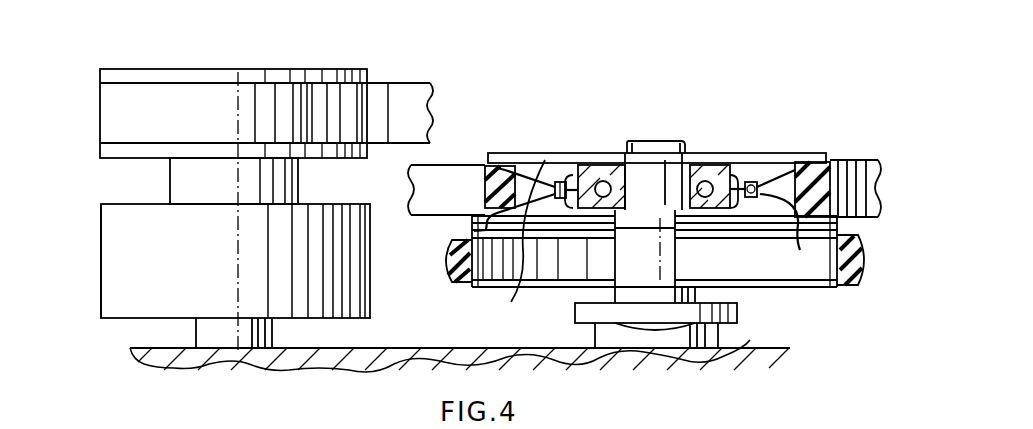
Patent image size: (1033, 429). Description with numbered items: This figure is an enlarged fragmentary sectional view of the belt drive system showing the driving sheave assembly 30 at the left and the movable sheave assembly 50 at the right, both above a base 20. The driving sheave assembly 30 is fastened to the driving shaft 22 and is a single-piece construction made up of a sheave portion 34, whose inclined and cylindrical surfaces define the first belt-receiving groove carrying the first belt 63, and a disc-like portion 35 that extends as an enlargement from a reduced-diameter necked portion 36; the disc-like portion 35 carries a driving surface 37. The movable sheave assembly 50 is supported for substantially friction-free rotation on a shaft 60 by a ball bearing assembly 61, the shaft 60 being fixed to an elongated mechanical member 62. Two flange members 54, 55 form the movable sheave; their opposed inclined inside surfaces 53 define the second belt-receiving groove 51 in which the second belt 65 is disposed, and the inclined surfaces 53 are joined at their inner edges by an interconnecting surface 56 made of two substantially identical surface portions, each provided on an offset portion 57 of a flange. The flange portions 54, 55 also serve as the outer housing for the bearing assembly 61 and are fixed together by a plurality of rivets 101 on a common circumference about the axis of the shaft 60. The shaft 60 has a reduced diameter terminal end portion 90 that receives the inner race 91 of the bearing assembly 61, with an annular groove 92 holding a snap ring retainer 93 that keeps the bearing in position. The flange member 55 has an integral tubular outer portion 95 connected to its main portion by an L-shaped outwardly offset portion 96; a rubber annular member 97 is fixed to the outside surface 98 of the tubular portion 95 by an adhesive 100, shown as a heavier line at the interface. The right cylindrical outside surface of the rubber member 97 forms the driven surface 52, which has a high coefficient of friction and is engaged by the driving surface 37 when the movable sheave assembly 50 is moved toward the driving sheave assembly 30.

The base 20 is at (778, 347).
The driving shaft 22 is at (185, 330).
The driving sheave assembly 30 is at (160, 170).
The sheave portion 34 is at (181, 68).
The disc-like portion 35 is at (113, 258).
The necked portion 36 is at (170, 188).
The driving surface 37 is at (101, 232).
The movable sheave assembly 50 is at (822, 120).
The second belt-receiving groove 51 is at (798, 166).
The driven surface 52 is at (869, 260).
The inclined surfaces 53 is at (795, 170).
The flange member 54 is at (531, 168).
The flange member 55 is at (525, 285).
The interconnecting surface 56 is at (758, 175).
The offset portion 57 is at (522, 172).
The shaft 60 is at (624, 262).
The ball bearing assembly 61 is at (703, 164).
The elongated mechanical member 62 is at (737, 315).
The first belt 63 is at (400, 88).
The second belt 65 is at (859, 170).
The reduced diameter terminal end portion 90 is at (655, 148).
The inner race 91 is at (634, 168).
The annular groove 92 is at (646, 154).
The snap ring retainer 93 is at (624, 162).
The tubular outer portion 95 is at (463, 280).
The L-shaped outwardly offset portion 96 is at (478, 219).
The annular member 97 is at (848, 278).
The outside surface 98 is at (853, 252).
The adhesive 100 is at (447, 255).
The rivets 101 is at (555, 164).